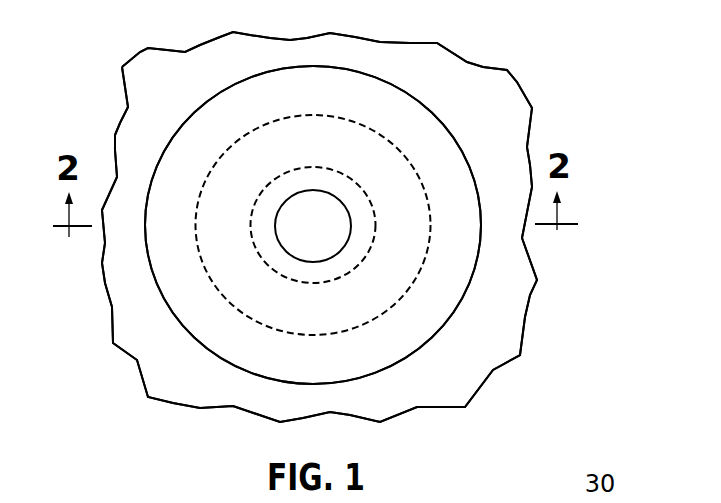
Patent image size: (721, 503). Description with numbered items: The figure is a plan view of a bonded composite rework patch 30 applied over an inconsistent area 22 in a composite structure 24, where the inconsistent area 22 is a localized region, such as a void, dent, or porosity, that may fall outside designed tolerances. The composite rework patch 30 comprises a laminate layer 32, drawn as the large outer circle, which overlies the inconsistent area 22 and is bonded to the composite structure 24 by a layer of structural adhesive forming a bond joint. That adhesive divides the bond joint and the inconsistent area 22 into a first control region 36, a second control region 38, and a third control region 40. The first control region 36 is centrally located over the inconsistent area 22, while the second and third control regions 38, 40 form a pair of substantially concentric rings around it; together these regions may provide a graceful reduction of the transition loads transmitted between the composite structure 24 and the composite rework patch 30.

The inconsistent area 22 is at (336, 183).
The composite structure 24 is at (137, 298).
The composite rework patch 30 is at (319, 221).
The laminate layer 32 is at (440, 314).
The first control region 36 is at (288, 267).
The second control region 38 is at (235, 272).
The third control region 40 is at (173, 245).